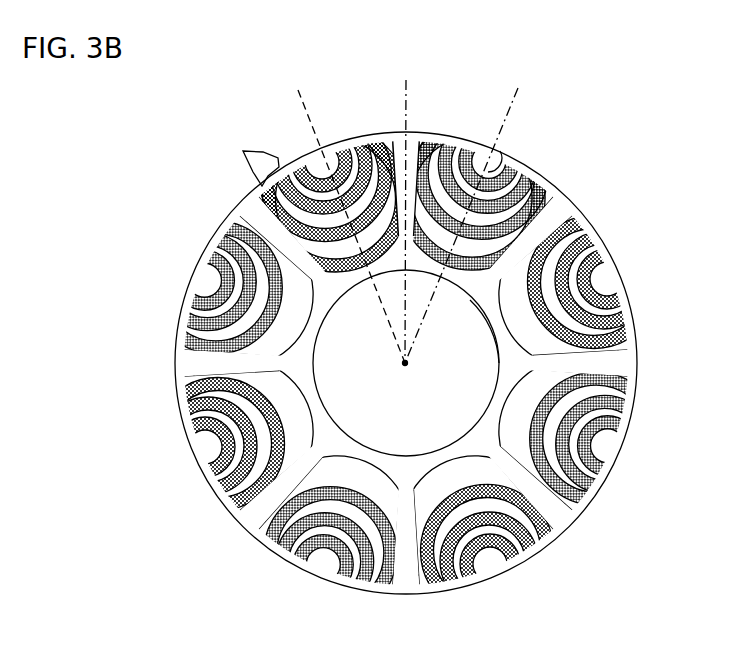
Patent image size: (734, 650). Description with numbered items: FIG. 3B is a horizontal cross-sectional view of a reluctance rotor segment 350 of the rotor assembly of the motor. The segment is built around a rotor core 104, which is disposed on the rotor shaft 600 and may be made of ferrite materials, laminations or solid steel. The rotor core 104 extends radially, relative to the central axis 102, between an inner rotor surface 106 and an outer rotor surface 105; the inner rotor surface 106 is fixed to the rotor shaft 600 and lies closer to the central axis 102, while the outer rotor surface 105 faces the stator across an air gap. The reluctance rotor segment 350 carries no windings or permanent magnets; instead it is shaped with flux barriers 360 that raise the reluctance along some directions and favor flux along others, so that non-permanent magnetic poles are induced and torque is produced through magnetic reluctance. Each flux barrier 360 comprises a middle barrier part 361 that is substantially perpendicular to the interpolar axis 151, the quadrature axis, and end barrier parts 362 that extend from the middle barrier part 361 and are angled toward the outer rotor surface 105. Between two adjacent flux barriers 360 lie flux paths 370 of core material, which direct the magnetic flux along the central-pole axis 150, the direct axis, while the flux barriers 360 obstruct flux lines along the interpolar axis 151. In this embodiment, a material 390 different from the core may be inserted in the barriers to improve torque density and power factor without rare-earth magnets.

The central axis 102 is at (403, 366).
The rotor core 104 is at (487, 438).
The outer rotor surface 105 is at (650, 335).
The inner rotor surface 106 is at (488, 327).
The central-pole axis 150 is at (416, 210).
The interpolar axis 151 is at (410, 213).
The reluctance rotor segment 350 is at (154, 311).
The flux barrier 360 is at (223, 162).
The middle barrier part 361 is at (500, 172).
The end barrier part 362 is at (457, 148).
The flux path 370 is at (396, 160).
The coil layer 390 is at (245, 151).
The rotor shaft 600 is at (424, 422).